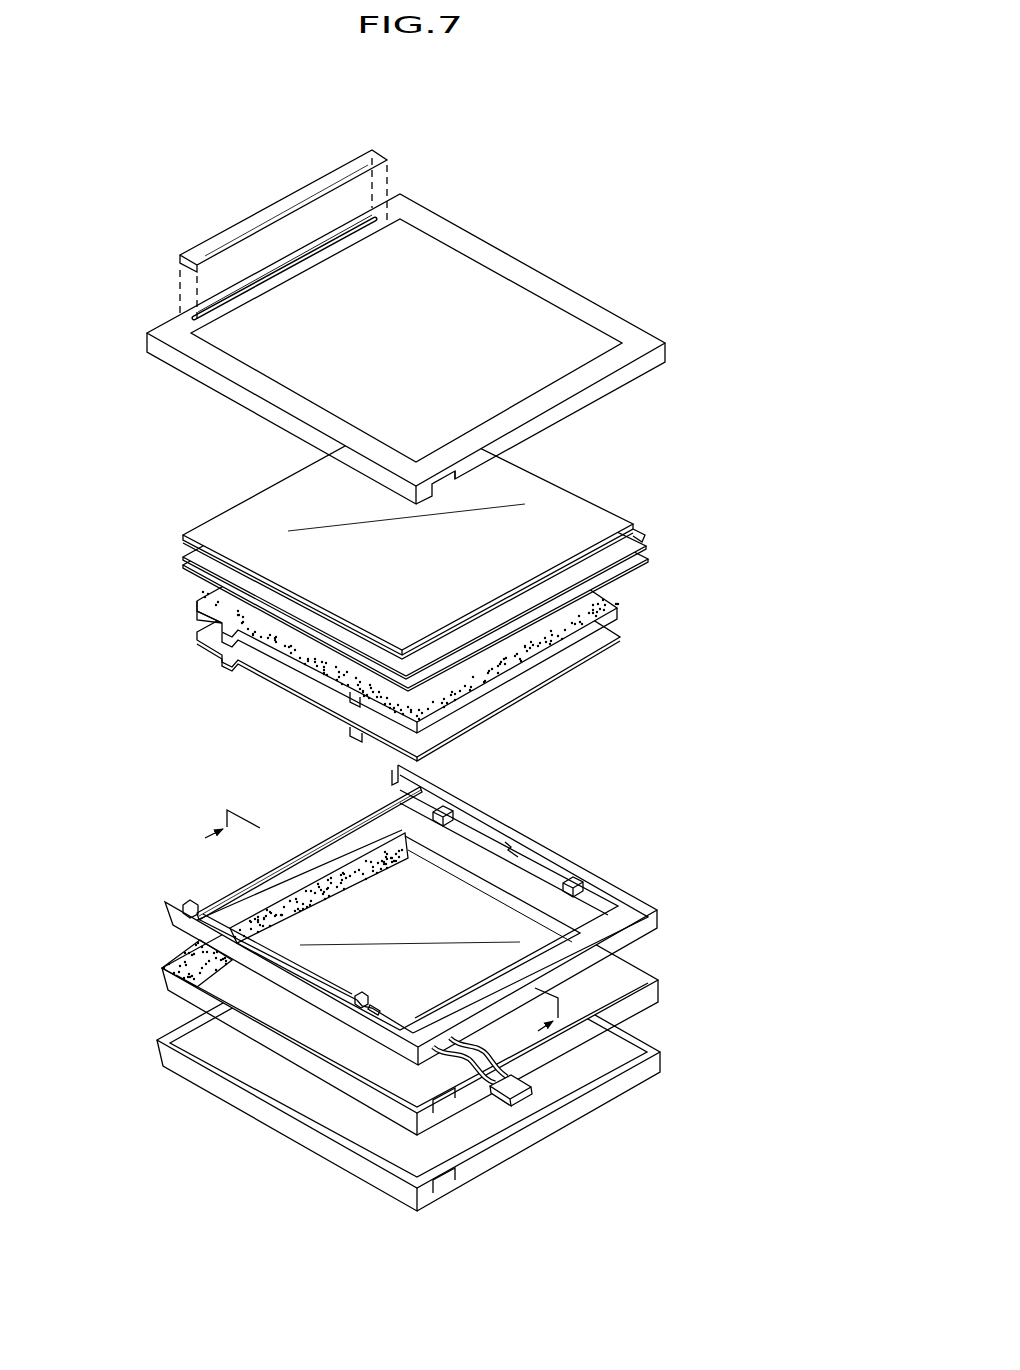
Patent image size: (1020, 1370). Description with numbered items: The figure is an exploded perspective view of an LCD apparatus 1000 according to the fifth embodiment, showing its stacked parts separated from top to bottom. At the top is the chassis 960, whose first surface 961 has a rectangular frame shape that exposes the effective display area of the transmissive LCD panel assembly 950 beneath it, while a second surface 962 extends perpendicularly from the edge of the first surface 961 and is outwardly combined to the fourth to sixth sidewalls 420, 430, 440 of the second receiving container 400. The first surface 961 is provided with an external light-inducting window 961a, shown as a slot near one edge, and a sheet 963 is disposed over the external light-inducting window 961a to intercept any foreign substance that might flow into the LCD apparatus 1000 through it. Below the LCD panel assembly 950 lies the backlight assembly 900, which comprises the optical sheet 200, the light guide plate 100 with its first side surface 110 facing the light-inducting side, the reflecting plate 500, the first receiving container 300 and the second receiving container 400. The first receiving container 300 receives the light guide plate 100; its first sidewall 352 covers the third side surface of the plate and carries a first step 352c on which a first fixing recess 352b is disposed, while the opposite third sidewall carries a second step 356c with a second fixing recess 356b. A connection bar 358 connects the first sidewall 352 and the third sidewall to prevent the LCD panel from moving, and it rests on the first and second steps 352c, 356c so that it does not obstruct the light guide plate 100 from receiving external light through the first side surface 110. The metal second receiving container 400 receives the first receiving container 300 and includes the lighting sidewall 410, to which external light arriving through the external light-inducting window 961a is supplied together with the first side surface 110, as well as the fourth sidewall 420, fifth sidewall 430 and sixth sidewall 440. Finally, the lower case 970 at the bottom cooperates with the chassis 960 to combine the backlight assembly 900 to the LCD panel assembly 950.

The LCD apparatus 1000 is at (596, 210).
The backlight assembly 900 is at (728, 512).
The chassis 960 is at (445, 309).
The first surface 961 is at (500, 420).
The external light-inducting window 961a is at (283, 262).
The second surface 962 is at (577, 398).
The sheet 963 is at (357, 162).
The LCD panel assembly 950 is at (561, 514).
The optical sheet 200 is at (652, 552).
The light guide plate 100 is at (414, 604).
The first side surface 110 is at (205, 596).
The reflecting plate 500 is at (500, 705).
The first receiving container 300 is at (436, 979).
The connection bar 358 is at (318, 842).
The second fixing recess 356b is at (600, 877).
The second step 356c is at (483, 830).
The first sidewall 352 is at (372, 1033).
The first fixing recess 352b is at (370, 1008).
The first step 352c is at (328, 995).
The second receiving container 400 is at (655, 956).
The lighting sidewall 410 is at (262, 906).
The fourth sidewall 420 is at (640, 1005).
The fifth sidewall 430 is at (457, 876).
The sixth sidewall 440 is at (186, 998).
The lower case 970 is at (607, 1093).